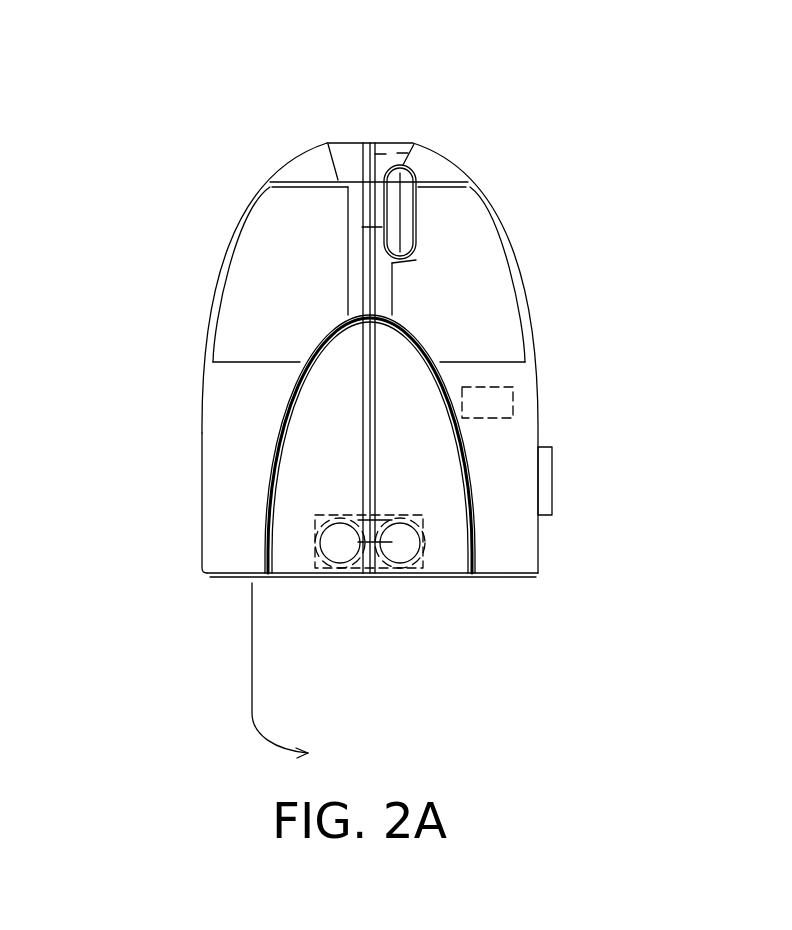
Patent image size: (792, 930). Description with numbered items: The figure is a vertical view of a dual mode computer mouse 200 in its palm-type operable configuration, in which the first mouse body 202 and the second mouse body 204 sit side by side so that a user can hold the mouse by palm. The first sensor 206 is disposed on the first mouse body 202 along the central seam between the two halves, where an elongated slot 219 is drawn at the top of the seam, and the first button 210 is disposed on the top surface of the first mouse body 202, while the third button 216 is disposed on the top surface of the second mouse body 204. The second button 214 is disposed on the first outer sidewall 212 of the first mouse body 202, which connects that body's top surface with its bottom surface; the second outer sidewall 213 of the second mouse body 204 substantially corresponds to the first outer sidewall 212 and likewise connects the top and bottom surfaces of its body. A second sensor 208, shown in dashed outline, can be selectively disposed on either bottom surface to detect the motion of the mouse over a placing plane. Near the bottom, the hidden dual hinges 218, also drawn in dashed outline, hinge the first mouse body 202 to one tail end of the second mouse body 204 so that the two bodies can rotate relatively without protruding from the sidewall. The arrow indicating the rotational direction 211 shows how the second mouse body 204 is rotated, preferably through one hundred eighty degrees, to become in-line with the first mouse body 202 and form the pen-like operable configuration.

The dual mode computer mouse 200 is at (687, 165).
The first mouse body 202 is at (488, 178).
The second mouse body 204 is at (233, 202).
The first sensor 206 is at (384, 148).
The second sensor 208 is at (513, 412).
The first button 210 is at (513, 342).
The rotational direction 211 is at (252, 715).
The first outer sidewall 212 is at (538, 558).
The second outer sidewall 213 is at (202, 538).
The second button 214 is at (552, 493).
The third button 216 is at (235, 322).
The hidden dual hinges 218 is at (333, 553).
The top slot 219 is at (402, 155).